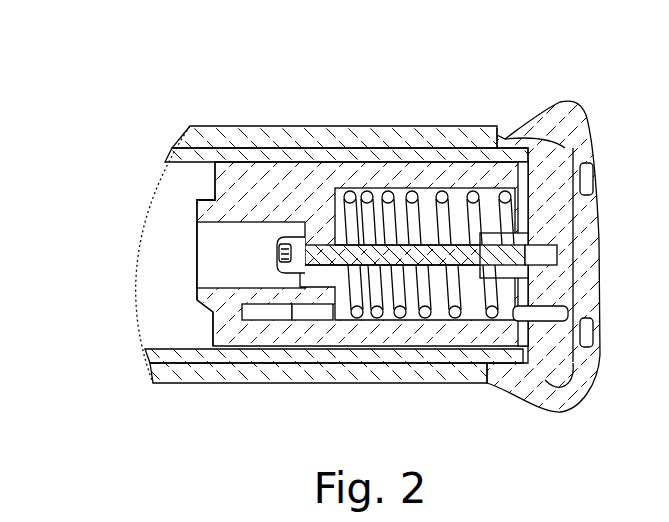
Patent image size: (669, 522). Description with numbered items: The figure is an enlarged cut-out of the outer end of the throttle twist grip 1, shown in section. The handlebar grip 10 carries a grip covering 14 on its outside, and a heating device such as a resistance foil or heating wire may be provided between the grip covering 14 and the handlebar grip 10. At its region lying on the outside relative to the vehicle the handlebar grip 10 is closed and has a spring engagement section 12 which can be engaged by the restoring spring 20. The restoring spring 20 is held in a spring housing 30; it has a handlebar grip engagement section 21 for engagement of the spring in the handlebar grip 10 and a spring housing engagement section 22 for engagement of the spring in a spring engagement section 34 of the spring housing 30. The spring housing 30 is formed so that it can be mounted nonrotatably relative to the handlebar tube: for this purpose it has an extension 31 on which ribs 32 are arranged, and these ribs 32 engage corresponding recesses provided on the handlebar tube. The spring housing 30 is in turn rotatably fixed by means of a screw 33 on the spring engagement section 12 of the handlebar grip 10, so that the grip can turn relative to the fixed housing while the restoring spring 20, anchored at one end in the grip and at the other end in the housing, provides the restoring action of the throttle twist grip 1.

The throttle twist grip 1 is at (459, 84).
The handlebar grip 10 is at (218, 352).
The spring engagement section 12 is at (542, 177).
The grip covering 14 is at (163, 368).
The restoring spring 20 is at (435, 222).
The handlebar grip engagement section 21 is at (515, 314).
The spring housing engagement section 22 is at (305, 320).
The spring housing 30 is at (290, 210).
The extension 31 is at (202, 210).
The ribs 32 is at (240, 190).
The screw 33 is at (278, 266).
The spring engagement section 34 is at (262, 305).